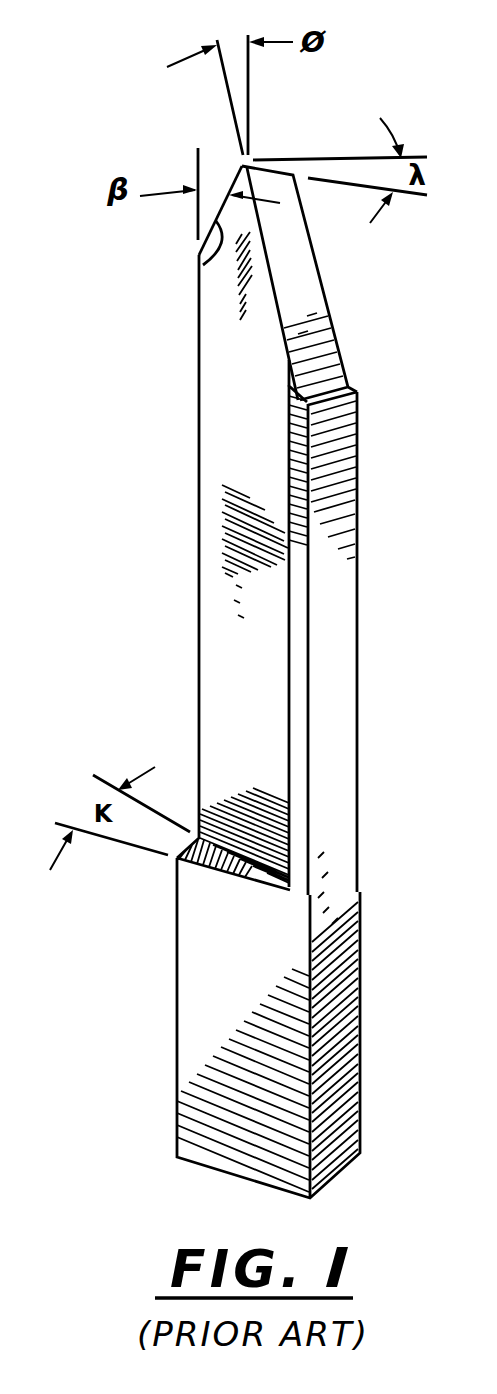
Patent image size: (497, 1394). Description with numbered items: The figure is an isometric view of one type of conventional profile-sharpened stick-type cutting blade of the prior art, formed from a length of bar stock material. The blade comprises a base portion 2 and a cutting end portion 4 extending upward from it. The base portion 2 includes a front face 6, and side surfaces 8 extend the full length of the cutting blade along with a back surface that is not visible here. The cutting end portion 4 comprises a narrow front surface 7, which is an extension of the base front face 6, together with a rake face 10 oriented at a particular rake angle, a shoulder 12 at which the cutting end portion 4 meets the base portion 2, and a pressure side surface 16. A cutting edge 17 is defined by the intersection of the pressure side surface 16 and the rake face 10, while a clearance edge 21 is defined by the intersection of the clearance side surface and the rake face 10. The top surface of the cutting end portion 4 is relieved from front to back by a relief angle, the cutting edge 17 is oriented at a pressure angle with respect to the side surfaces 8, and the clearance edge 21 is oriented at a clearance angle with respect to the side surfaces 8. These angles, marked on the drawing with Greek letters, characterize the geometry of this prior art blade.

The base portion 2 is at (167, 1068).
The cutting end portion 4 is at (178, 528).
The front face 6 is at (213, 985).
The narrow front surface 7 is at (297, 559).
The side surfaces 8 is at (340, 1040).
The rake face 10 is at (253, 449).
The shoulder 12 is at (343, 393).
The pressure side surface 16 is at (327, 340).
The cutting edge 17 is at (278, 302).
The clearance edge 21 is at (200, 264).